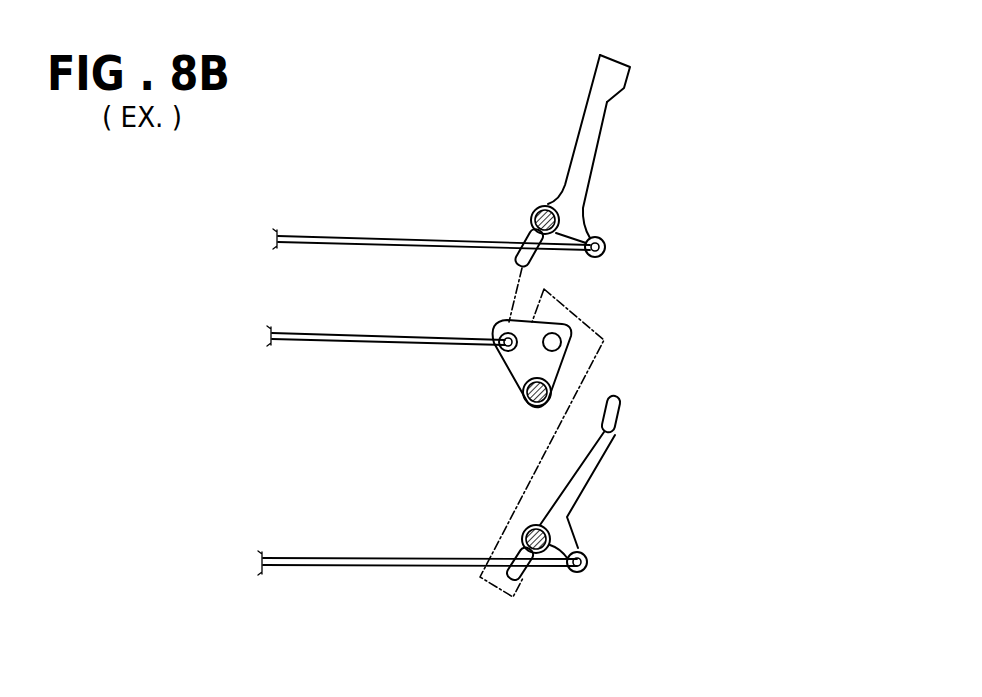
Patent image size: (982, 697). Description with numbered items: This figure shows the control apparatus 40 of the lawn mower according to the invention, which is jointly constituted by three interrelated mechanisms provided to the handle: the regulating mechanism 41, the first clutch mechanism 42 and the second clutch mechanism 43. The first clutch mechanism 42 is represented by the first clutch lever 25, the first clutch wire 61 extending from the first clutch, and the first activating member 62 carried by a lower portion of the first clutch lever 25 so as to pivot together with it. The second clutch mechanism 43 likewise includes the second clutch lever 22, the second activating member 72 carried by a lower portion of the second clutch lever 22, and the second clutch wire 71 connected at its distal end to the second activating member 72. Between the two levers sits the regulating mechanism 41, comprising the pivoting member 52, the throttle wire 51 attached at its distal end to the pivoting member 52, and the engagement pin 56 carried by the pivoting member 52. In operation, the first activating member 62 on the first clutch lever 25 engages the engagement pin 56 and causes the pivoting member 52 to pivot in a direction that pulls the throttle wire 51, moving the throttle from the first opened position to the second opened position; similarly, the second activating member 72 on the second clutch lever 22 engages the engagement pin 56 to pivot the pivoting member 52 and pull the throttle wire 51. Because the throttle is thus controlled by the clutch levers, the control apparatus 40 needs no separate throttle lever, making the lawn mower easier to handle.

The control apparatus 40 is at (491, 117).
The first clutch mechanism 42 is at (652, 83).
The first clutch lever 25 is at (622, 106).
The first activating member 62 is at (501, 246).
The first clutch wire 61 is at (306, 234).
The throttle wire 51 is at (310, 335).
The pivoting member 52 is at (490, 381).
The engagement pin 56 is at (557, 335).
The regulating mechanism 41 is at (595, 312).
The second clutch lever 22 is at (626, 456).
The second clutch mechanism 43 is at (650, 427).
The second activating member 72 is at (499, 548).
The second clutch wire 71 is at (300, 558).